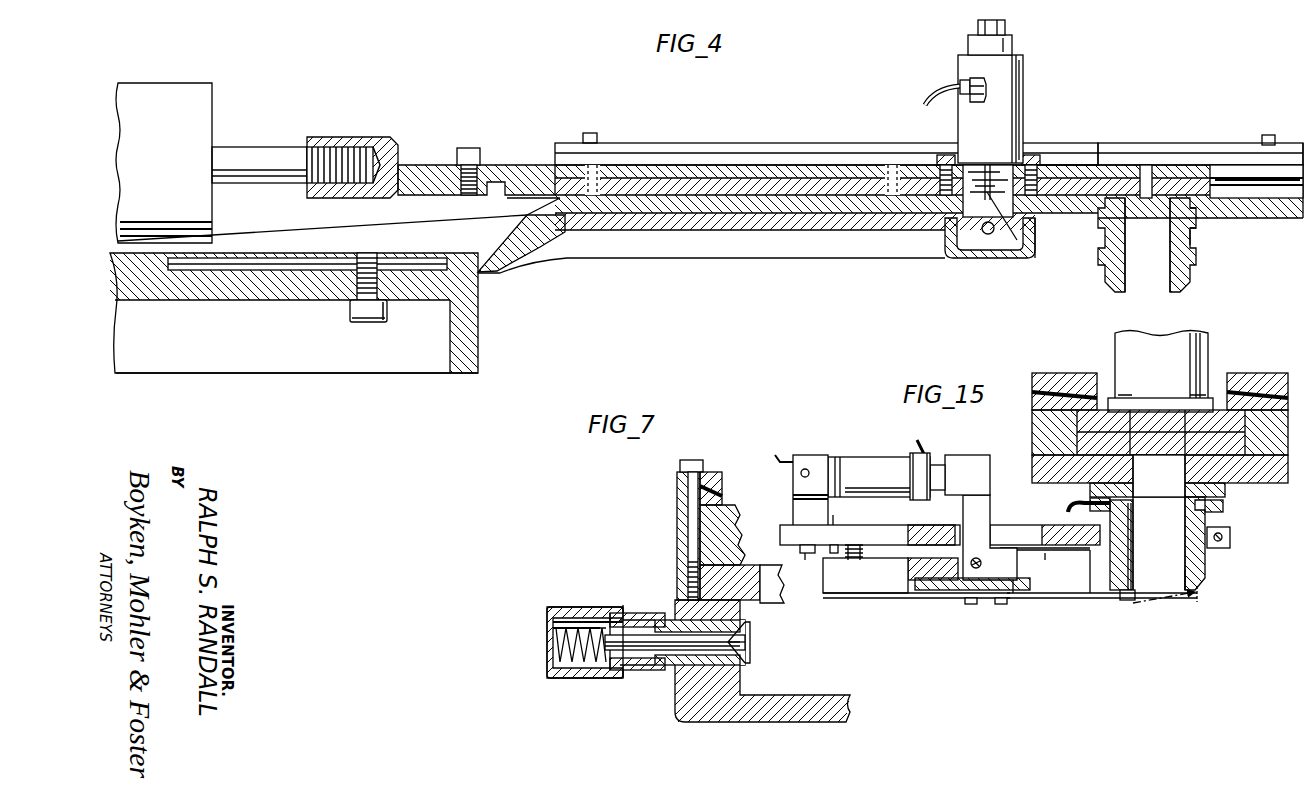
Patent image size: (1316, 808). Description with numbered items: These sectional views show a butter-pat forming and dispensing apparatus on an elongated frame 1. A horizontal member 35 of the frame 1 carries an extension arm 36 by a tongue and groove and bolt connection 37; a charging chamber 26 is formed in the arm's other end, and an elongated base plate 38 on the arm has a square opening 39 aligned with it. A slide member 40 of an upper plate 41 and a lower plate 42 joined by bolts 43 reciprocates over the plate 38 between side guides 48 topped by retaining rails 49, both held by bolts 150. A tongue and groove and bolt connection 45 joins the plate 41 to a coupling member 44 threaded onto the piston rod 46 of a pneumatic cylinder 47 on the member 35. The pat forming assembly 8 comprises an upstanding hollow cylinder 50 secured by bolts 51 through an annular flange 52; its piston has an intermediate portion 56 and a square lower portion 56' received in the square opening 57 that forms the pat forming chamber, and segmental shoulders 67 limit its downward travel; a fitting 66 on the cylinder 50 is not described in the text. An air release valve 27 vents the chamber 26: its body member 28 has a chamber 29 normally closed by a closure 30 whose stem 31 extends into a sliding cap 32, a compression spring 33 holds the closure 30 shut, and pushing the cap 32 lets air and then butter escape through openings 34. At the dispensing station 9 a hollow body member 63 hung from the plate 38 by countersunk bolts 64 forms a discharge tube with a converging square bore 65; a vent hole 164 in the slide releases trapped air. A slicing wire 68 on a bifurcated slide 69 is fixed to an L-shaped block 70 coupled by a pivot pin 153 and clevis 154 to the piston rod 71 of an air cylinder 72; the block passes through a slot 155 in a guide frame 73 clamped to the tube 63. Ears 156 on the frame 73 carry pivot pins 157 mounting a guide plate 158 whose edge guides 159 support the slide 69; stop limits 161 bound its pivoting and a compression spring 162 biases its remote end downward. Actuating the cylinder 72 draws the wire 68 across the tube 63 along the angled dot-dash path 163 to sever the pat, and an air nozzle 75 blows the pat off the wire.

In FIG. 4, the frame 1 is at (206, 378).
In FIG. 4, the pat forming assembly 8 is at (1027, 66).
In FIG. 15, the pat forming assembly 8 is at (1112, 345).
In FIG. 4, the dispensing station 9 is at (1189, 283).
In FIG. 4, the charging chamber 26 is at (991, 260).
In FIG. 7, the charging chamber 26 is at (802, 700).
In FIG. 7, the air release valve 27 is at (627, 605).
In FIG. 7, the body member 28 is at (637, 670).
In FIG. 4, the chamber 29 is at (984, 234).
In FIG. 7, the chamber 29 is at (750, 649).
In FIG. 7, the closure 30 is at (750, 634).
In FIG. 7, the stem 31 is at (673, 637).
In FIG. 7, the cap 32 is at (548, 665).
In FIG. 7, the compression spring 33 is at (553, 619).
In FIG. 7, the openings 34 is at (657, 622).
In FIG. 4, the horizontal member 35 is at (468, 343).
In FIG. 4, the extension arm 36 is at (700, 248).
In FIG. 4, the tongue and groove and bolt connection 37 is at (365, 262).
In FIG. 4, the base plate 38 is at (1272, 218).
In FIG. 4, the square opening 39 is at (950, 229).
In FIG. 7, the square opening 39 is at (768, 578).
In FIG. 4, the slide member 40 is at (500, 161).
In FIG. 7, the slide member 40 is at (744, 529).
In FIG. 15, the slide member 40 is at (1216, 403).
In FIG. 4, the upper plate 41 is at (554, 164).
In FIG. 4, the lower plate 42 is at (516, 198).
In FIG. 4, the bolts 43 is at (605, 160).
In FIG. 4, the coupling member 44 is at (345, 138).
In FIG. 4, the tongue and groove and bolt connection 45 is at (436, 172).
In FIG. 4, the piston rod 46 is at (260, 148).
In FIG. 4, the pneumatic cylinder 47 is at (192, 102).
In FIG. 4, the side guides 48 is at (1285, 180).
In FIG. 7, the side guides 48 is at (677, 535).
In FIG. 15, the side guides 48 is at (1030, 426).
In FIG. 4, the retaining rails 49 is at (1127, 150).
In FIG. 7, the retaining rails 49 is at (722, 490).
In FIG. 15, the retaining rails 49 is at (1030, 381).
In FIG. 4, the hollow cylinder 50 is at (1007, 92).
In FIG. 4, the bolts 51 is at (945, 156).
In FIG. 4, the annular flange 52 is at (1047, 164).
In FIG. 4, the intermediate portion 56 is at (988, 177).
In FIG. 4, the lower portion 56' is at (1029, 227).
In FIG. 4, the square opening 57 is at (1033, 224).
In FIG. 4, the hollow body member 63 is at (1189, 252).
In FIG. 15, the hollow body member 63 is at (1214, 524).
In FIG. 4, the countersunk bolts 64 is at (1197, 218).
In FIG. 4, the internal bore 65 is at (1160, 277).
In FIG. 15, the internal bore 65 is at (1180, 556).
In FIG. 4, the hose 66 is at (940, 86).
In FIG. 4, the segmental shoulders 67 is at (977, 165).
In FIG. 15, the slicing wire 68 is at (1125, 603).
In FIG. 15, the bifurcated slide 69 is at (1103, 593).
In FIG. 15, the L-shaped block 70 is at (983, 518).
In FIG. 15, the piston rod 71 is at (942, 465).
In FIG. 15, the air cylinder 72 is at (857, 460).
In FIG. 15, the guide frame 73 is at (857, 530).
In FIG. 15, the air nozzle 75 is at (1127, 585).
In FIG. 4, the bolts 150 is at (592, 133).
In FIG. 7, the bolts 150 is at (692, 461).
In FIG. 15, the pivot pin 153 is at (1034, 470).
In FIG. 15, the clevis 154 is at (952, 457).
In FIG. 15, the elongated slot 155 is at (1008, 532).
In FIG. 15, the ears 156 is at (945, 553).
In FIG. 15, the pivot pins 157 is at (955, 592).
In FIG. 15, the guide plate 158 is at (1047, 568).
In FIG. 15, the edge guides 159 is at (927, 595).
In FIG. 15, the stop limits 161 is at (833, 554).
In FIG. 15, the compression spring 162 is at (853, 553).
In FIG. 15, the dot-dash line 163 is at (1167, 613).
In FIG. 4, the vent hole 164 is at (1148, 170).